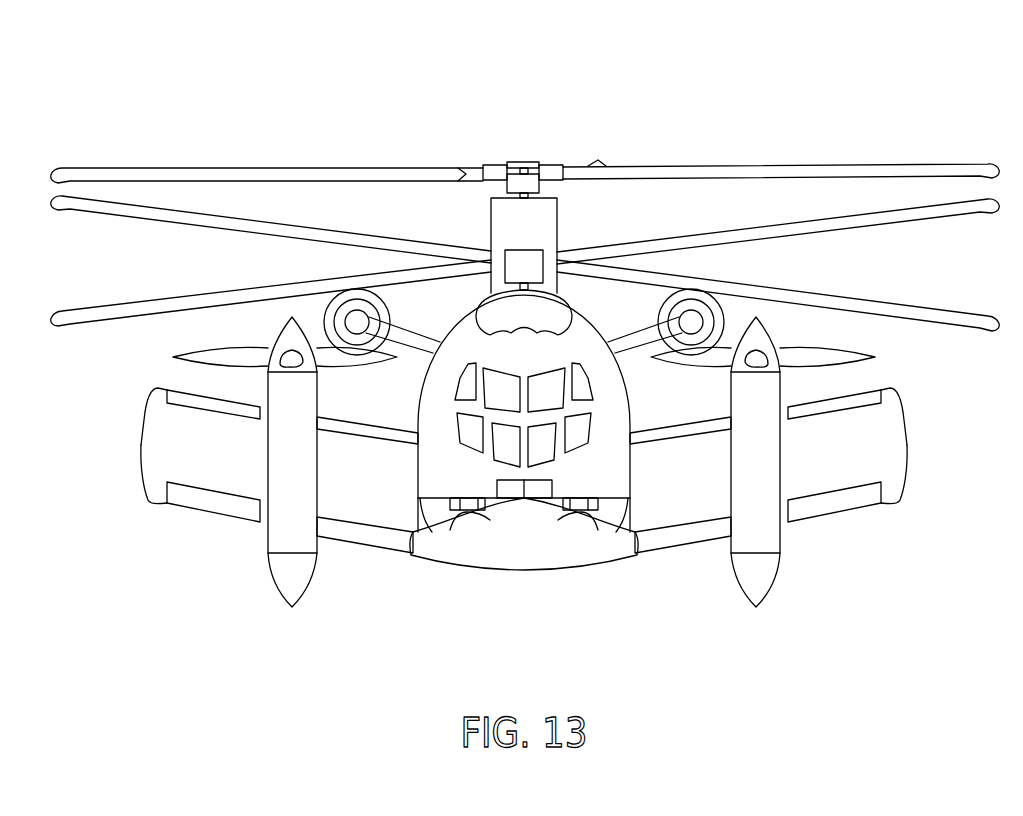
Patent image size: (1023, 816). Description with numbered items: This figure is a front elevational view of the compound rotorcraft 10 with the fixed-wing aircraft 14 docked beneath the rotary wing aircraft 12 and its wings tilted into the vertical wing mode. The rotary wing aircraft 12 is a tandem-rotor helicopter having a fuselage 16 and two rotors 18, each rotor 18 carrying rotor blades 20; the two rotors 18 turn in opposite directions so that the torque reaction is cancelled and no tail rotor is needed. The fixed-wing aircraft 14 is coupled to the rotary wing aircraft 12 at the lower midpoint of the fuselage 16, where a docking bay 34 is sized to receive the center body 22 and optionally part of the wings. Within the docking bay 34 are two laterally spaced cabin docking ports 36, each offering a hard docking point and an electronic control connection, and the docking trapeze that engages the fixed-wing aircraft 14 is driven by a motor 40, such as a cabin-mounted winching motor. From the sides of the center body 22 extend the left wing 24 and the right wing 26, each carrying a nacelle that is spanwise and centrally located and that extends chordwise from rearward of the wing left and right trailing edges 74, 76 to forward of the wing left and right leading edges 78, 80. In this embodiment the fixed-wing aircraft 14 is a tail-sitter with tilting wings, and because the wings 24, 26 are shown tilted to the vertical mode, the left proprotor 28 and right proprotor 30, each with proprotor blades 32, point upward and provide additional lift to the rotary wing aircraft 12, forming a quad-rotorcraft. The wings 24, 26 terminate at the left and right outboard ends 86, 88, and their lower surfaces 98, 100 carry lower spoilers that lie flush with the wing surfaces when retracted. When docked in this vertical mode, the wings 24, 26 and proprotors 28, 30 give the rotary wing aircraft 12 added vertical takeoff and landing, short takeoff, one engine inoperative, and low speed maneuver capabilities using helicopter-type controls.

The compound rotorcraft 10 is at (920, 120).
The rotary wing aircraft 12 is at (298, 297).
The fixed-wing aircraft 14 is at (466, 591).
The fuselage 16 is at (633, 398).
The rotor 18 is at (530, 162).
The rotor blades 20 is at (778, 164).
The center body 22 is at (523, 562).
The left wing 24 is at (905, 415).
The right wing 26 is at (150, 413).
The left proprotor 28 is at (777, 340).
The right proprotor 30 is at (272, 342).
The proprotor blades 32 is at (192, 358).
The docking bay 34 is at (620, 520).
The cabin docking port 36 is at (447, 504).
The motor 40 is at (549, 490).
The wing left trailing edge 74 is at (838, 512).
The wing right trailing edge 76 is at (207, 512).
The wing left leading edge 78 is at (838, 404).
The wing right leading edge 80 is at (368, 428).
The left outboard end 86 is at (907, 452).
The right outboard end 88 is at (142, 460).
The lower surface 98 is at (885, 462).
The lower surface 100 is at (165, 462).